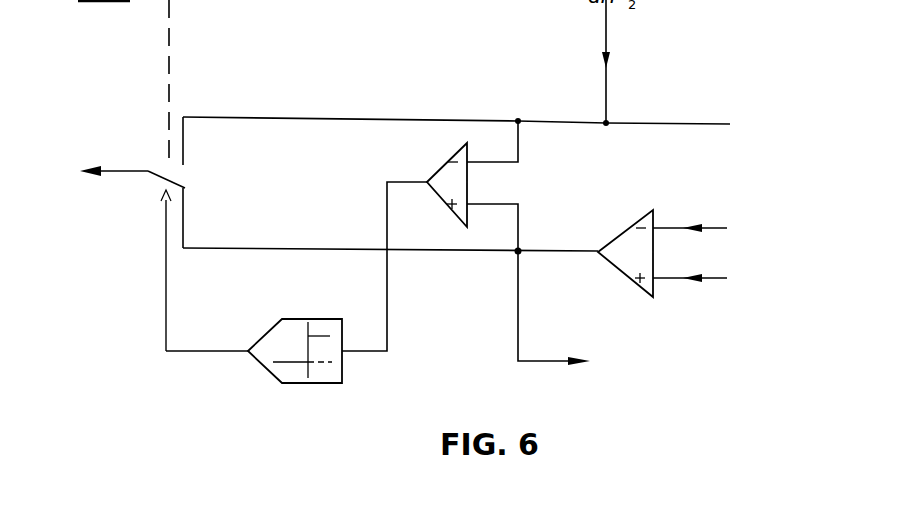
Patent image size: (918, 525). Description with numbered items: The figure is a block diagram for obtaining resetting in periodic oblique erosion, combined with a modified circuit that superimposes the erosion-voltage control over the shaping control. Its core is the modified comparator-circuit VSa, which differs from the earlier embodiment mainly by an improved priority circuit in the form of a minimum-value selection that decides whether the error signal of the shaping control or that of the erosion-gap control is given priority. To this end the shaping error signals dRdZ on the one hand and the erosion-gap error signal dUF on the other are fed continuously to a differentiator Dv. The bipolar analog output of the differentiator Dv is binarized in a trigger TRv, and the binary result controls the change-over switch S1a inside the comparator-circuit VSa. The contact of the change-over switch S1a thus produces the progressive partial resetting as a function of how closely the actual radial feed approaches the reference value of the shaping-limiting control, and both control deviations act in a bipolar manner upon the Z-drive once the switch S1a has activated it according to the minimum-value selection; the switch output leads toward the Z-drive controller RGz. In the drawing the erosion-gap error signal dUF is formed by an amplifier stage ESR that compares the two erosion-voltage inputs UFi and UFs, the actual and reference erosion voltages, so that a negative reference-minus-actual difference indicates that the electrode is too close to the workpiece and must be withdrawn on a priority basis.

The change-over switch S1a is at (177, 167).
The output to controller RGz is at (106, 159).
The comparator-circuit VSa is at (306, 203).
The trigger TRv is at (295, 373).
The differentiator Dv is at (463, 186).
The error signal of the erosion-gap control dUF is at (554, 326).
The error signal amplifier ESR is at (625, 268).
The input voltage UFi is at (690, 213).
The input voltage UFs is at (690, 295).
The error signals dR and dZ dRdZ is at (644, 63).